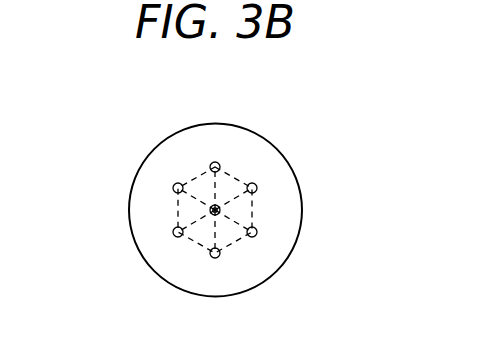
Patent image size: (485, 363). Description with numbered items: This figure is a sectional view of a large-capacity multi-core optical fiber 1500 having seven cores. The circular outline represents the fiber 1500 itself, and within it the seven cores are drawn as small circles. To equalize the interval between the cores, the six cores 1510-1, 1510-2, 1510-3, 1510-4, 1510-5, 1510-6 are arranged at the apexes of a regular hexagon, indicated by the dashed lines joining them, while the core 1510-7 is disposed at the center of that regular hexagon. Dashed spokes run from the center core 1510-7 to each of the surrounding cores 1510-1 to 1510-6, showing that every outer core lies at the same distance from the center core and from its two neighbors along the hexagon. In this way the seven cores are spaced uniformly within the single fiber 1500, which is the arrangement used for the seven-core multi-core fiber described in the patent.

The 7-core multi-core fiber 1500 is at (187, 135).
The core 1510-1 is at (212, 258).
The core 1510-2 is at (174, 235).
The core 1510-3 is at (174, 184).
The core 1510-4 is at (216, 163).
The core 1510-5 is at (256, 184).
The core 1510-6 is at (256, 238).
The core 1510-7 is at (210, 209).